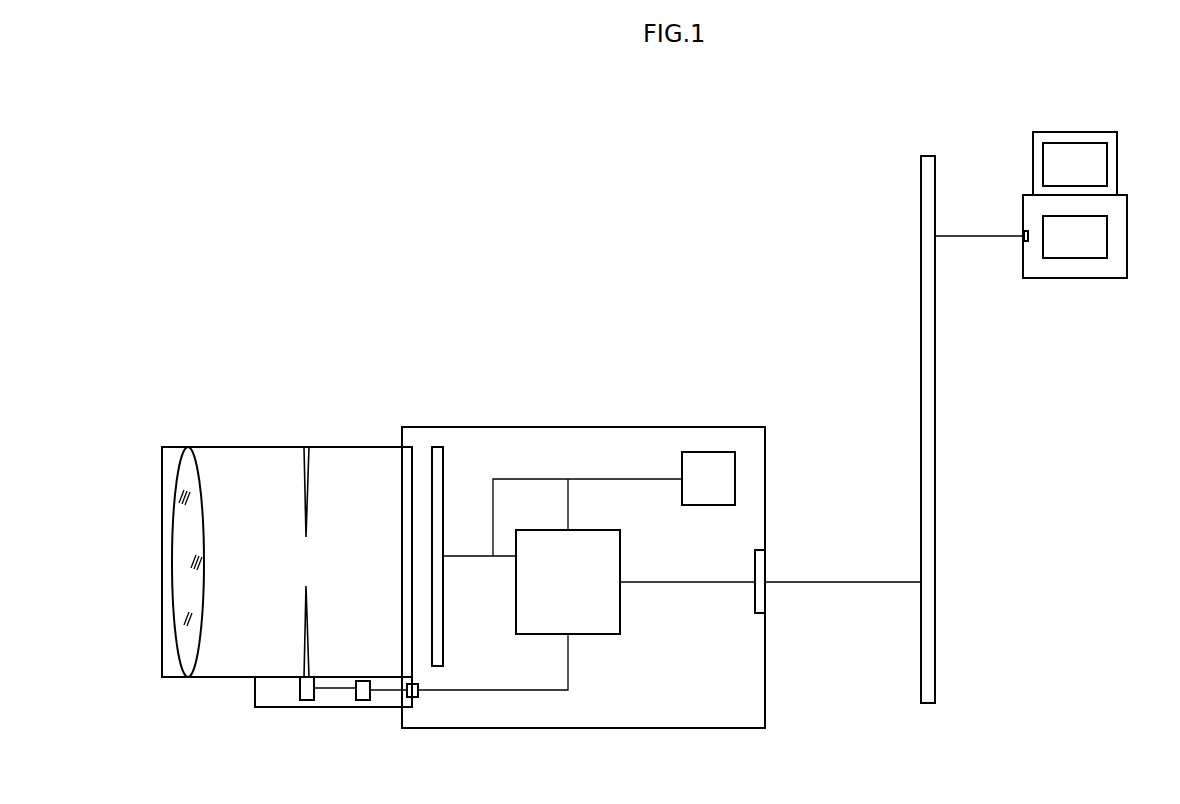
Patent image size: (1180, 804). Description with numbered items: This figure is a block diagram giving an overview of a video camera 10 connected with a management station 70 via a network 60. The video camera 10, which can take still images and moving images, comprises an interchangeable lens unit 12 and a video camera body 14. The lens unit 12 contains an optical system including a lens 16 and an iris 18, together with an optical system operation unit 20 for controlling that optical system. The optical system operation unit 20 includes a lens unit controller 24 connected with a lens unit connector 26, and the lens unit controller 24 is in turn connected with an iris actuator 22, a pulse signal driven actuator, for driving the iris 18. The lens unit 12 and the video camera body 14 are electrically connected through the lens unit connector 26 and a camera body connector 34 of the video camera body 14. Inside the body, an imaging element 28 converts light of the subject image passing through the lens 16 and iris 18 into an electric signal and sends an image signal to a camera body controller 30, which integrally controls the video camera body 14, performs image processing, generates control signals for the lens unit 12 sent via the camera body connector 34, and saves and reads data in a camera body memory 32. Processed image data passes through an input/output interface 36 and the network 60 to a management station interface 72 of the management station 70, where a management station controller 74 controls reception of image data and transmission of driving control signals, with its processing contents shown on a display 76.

The video camera 10 is at (512, 349).
The interchangeable lens unit 12 is at (288, 447).
The video camera body 14 is at (585, 427).
The lens 16 is at (199, 452).
The iris 18 is at (304, 498).
The optical system operation unit 20 is at (261, 707).
The iris actuator 22 is at (305, 700).
The lens unit controller 24 is at (363, 700).
The lens unit connector 26 is at (404, 698).
The imaging element 28 is at (443, 460).
The camera body controller 30 is at (614, 530).
The camera body memory 32 is at (711, 452).
The camera body connector 34 is at (421, 692).
The input/output interface 36 is at (755, 562).
The network 60 is at (945, 319).
The management station 70 is at (1095, 195).
The management station interface 72 is at (1030, 238).
The management station controller 74 is at (1107, 235).
The display 76 is at (1107, 163).